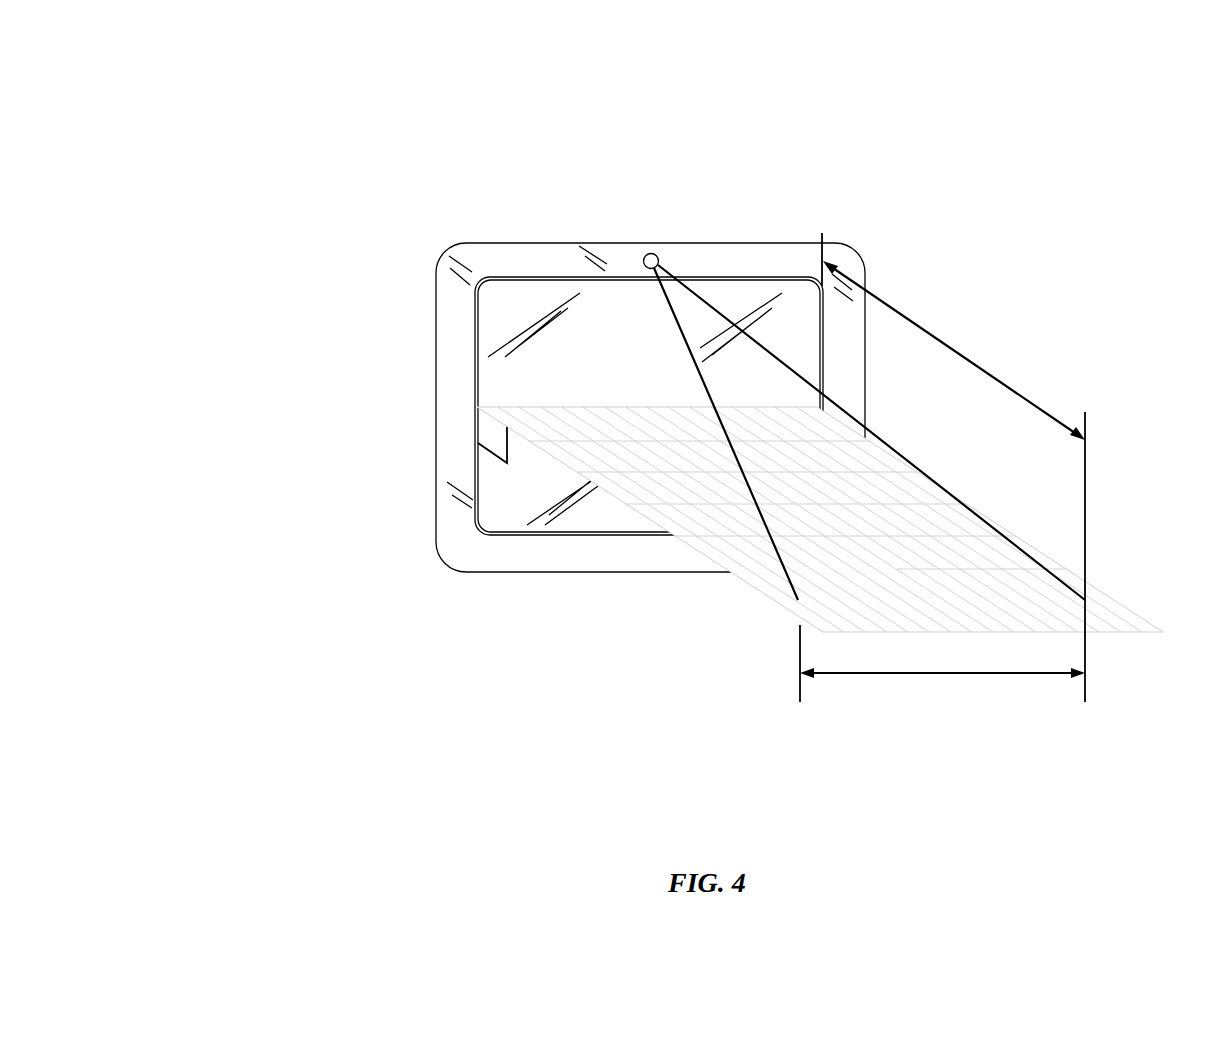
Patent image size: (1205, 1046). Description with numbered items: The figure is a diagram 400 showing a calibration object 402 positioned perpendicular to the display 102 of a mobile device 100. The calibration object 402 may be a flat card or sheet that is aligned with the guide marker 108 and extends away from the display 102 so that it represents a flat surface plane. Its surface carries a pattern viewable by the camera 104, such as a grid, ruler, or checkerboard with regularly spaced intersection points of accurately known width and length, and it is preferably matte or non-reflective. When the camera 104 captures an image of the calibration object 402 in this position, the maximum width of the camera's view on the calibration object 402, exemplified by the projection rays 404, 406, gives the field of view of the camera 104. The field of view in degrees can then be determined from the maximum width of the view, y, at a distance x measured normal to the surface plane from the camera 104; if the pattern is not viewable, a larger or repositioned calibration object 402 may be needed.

The diagram 400 is at (221, 109).
The mobile device 100 is at (426, 233).
The display 102 is at (493, 297).
The camera 104 is at (651, 254).
The projection ray 406 is at (710, 305).
The projection ray 404 is at (690, 351).
The guide marker 108 is at (500, 405).
The calibration object 402 is at (758, 583).